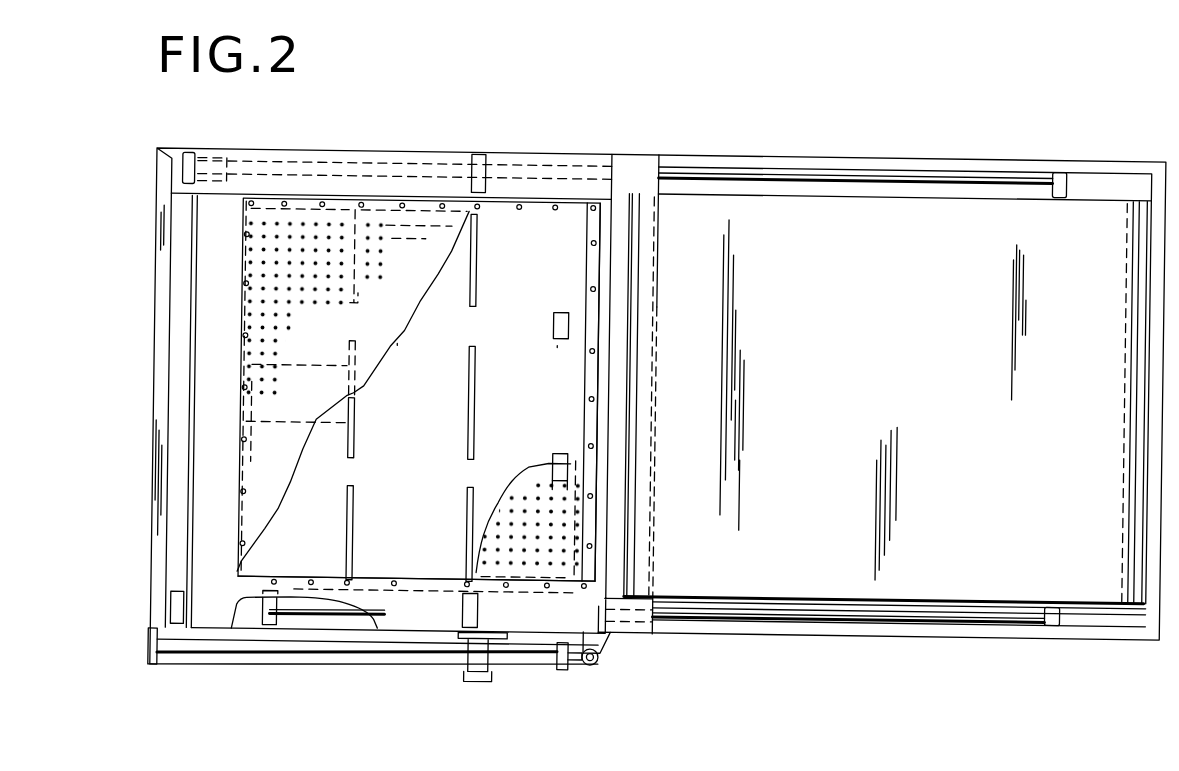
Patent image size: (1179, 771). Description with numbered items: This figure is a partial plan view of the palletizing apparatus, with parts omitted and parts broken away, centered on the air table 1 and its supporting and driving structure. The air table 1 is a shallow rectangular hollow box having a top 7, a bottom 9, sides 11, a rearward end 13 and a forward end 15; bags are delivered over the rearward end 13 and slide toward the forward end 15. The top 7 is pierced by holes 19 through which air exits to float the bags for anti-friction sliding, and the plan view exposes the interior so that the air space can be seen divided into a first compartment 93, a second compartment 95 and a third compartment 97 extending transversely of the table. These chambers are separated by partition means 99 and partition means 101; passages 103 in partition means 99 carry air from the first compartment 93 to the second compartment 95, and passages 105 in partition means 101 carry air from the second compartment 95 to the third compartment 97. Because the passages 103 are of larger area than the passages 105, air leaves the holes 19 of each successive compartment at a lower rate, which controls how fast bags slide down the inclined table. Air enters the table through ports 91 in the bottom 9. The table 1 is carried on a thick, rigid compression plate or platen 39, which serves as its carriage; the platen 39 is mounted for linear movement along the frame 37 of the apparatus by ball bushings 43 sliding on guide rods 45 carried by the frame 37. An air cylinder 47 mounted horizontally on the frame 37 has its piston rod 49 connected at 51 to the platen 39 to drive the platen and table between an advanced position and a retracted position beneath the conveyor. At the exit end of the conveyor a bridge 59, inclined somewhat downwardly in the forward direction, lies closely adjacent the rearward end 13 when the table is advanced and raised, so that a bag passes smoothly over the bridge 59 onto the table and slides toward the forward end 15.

The air table 1 is at (190, 412).
The top 7 is at (246, 280).
The bottom 9 is at (565, 386).
The sides 11 is at (437, 192).
The rearward end 13 is at (603, 324).
The forward end 15 is at (190, 455).
The holes 19 is at (251, 249).
The frame 37 is at (1119, 627).
The platen 39 is at (600, 147).
The ball bushings 43 is at (283, 145).
The guide rods 45 is at (985, 165).
The air cylinder 47 is at (245, 663).
The piston rod 49 is at (585, 649).
The connection 51 is at (607, 649).
The bridge 59 is at (664, 633).
The ports 91 is at (571, 320).
The first compartment 93 is at (554, 370).
The second compartment 95 is at (424, 371).
The third compartment 97 is at (314, 530).
The partition means 99 is at (482, 381).
The partition means 101 is at (362, 418).
The passages 103 is at (475, 308).
The passages 105 is at (357, 316).